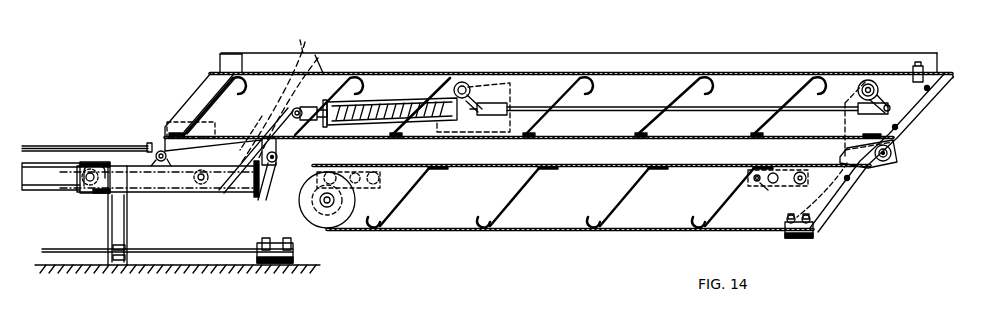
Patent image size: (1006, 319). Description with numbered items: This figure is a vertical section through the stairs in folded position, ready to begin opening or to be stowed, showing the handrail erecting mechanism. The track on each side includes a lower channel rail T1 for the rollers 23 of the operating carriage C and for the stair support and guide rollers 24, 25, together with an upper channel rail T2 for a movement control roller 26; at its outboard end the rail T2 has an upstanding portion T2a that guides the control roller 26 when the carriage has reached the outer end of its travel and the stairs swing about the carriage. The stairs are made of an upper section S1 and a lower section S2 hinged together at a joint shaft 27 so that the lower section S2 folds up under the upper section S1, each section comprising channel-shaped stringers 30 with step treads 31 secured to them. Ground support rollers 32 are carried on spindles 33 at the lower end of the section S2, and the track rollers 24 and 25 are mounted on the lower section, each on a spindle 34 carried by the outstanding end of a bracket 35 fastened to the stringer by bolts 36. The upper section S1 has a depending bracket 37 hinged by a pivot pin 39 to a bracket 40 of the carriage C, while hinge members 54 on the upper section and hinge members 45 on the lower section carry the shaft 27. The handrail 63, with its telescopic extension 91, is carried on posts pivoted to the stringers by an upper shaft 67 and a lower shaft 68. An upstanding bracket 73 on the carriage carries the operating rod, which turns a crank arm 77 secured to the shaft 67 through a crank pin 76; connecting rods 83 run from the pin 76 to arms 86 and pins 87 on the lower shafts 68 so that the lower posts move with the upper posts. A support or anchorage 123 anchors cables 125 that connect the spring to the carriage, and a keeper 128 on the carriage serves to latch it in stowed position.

The telescopic extension 91 is at (238, 60).
The upstanding portion T2a is at (284, 96).
The upper shaft 67 is at (462, 82).
The crank arm 77 is at (487, 103).
The crank pin 76 is at (504, 109).
The step treads 31 is at (563, 88).
The upper section S1 is at (656, 48).
The handrail 63 is at (795, 56).
The stringers 30 is at (843, 72).
The lower shaft 68 is at (870, 82).
The arm 86 is at (882, 100).
The hinge members 54 is at (915, 108).
The pin 87 is at (880, 113).
The joint shaft 27 is at (893, 151).
The connecting rods 83 is at (747, 110).
The spindle 34 is at (800, 170).
The stair support and guide roller 24 is at (808, 178).
The bolts 36 is at (762, 182).
The bracket 35 is at (757, 186).
The hinge members 45 is at (822, 222).
The lower section S2 is at (639, 222).
The ground support rollers 32 is at (329, 206).
The spindles 33 is at (322, 202).
The stair support and guide roller 25 is at (326, 172).
The depending bracket 37 is at (290, 145).
The pivot pin 39 is at (279, 157).
The bracket 40 is at (268, 193).
The upstanding bracket 73 is at (263, 132).
The upper channel rail T2 is at (86, 147).
The keeper 128 is at (98, 162).
The movement control roller 26 is at (153, 152).
The lower channel rail T1 is at (58, 188).
The rollers 23 is at (76, 193).
The operating carriage C is at (176, 194).
The support or anchorage 123 is at (290, 250).
The cables 125 is at (137, 254).